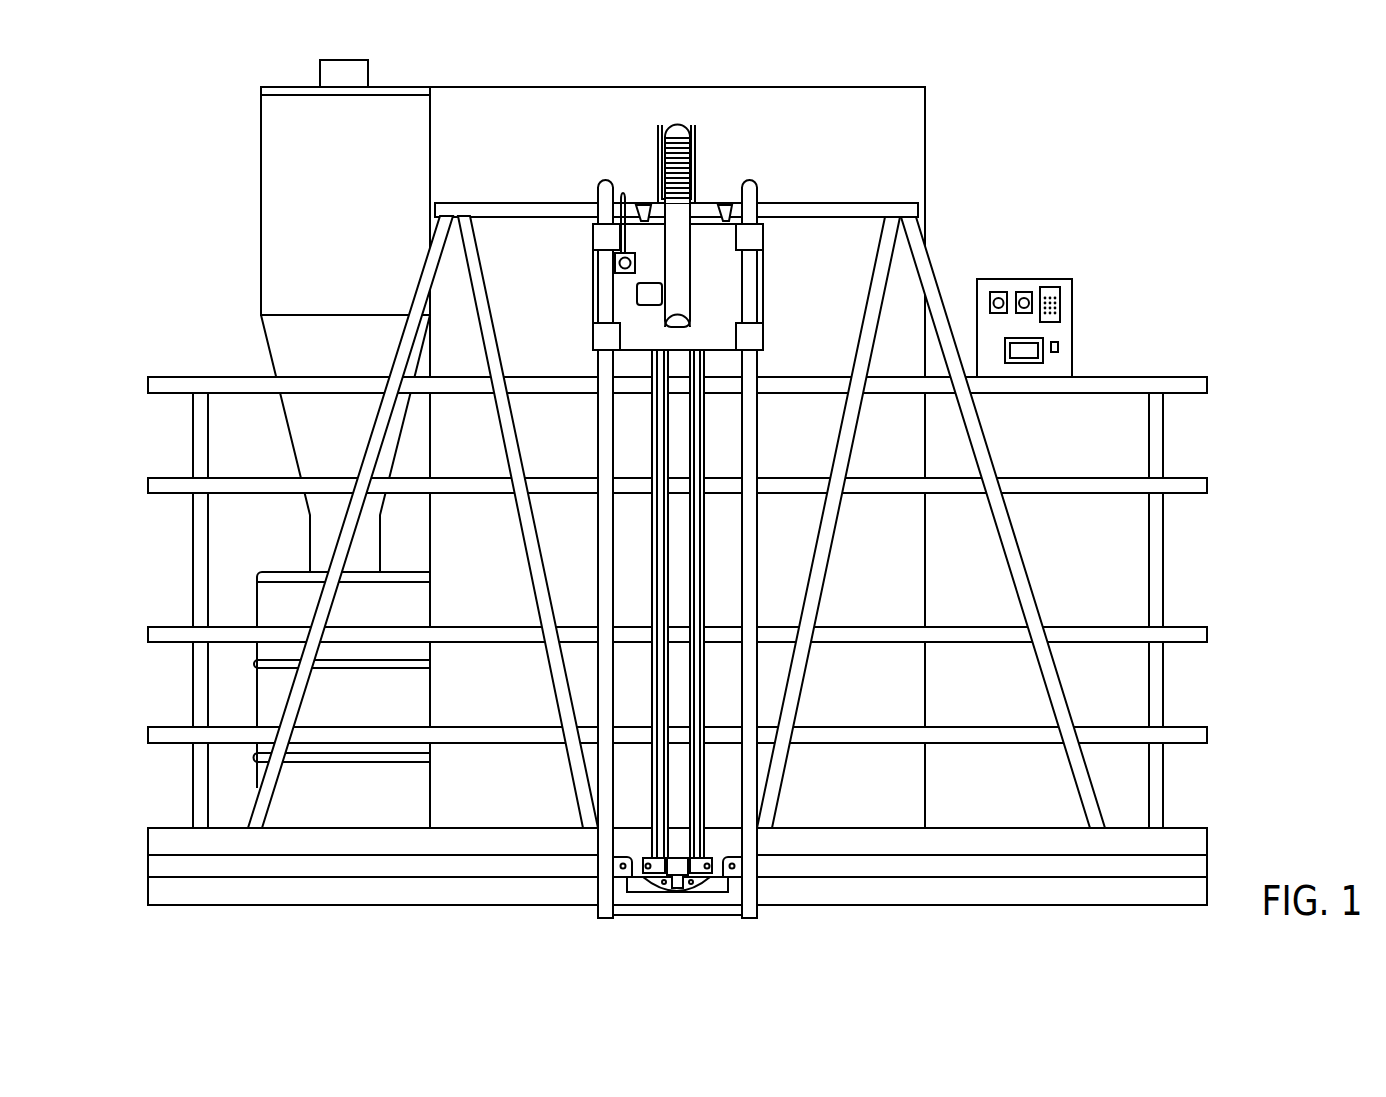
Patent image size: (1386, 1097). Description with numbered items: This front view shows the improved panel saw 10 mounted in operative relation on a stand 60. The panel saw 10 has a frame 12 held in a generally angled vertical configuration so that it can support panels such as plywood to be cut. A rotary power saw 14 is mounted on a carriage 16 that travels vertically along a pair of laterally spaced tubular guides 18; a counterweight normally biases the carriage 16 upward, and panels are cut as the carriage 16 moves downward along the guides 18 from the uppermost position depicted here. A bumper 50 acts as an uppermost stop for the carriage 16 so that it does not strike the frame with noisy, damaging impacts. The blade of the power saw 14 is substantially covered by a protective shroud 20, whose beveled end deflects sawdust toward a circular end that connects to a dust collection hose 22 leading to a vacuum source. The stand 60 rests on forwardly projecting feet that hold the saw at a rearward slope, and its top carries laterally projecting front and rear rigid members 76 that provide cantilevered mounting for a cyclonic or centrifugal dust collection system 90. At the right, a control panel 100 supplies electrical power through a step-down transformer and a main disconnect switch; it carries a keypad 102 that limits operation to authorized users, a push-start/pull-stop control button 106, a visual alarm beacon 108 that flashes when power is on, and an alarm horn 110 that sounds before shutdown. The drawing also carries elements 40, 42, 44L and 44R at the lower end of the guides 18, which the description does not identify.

The panel saw 10 is at (1093, 232).
The frame 12 is at (1157, 385).
The rotary power saw 14 is at (642, 277).
The carriage 16 is at (728, 268).
The tubular guides 18 is at (607, 545).
The saw blade protective shroud 20 is at (683, 297).
The dust collection hose 22 is at (677, 138).
The shaft 40 is at (683, 586).
The plate 42 is at (711, 902).
The left clamp 44L is at (643, 884).
The right clamp 44R is at (725, 882).
The bumper 50 is at (725, 210).
The stand 60 is at (913, 125).
The front and rear rigid members 76 is at (398, 94).
The cyclonic/centrifugal dust collection system 90 is at (325, 233).
The control panel 100 is at (1073, 285).
The keypad 102 is at (1062, 313).
The push-start/pull-stop control button 106 is at (1000, 292).
The visual alarm beacon 108 is at (1040, 360).
The alarm horn 110 is at (1023, 293).